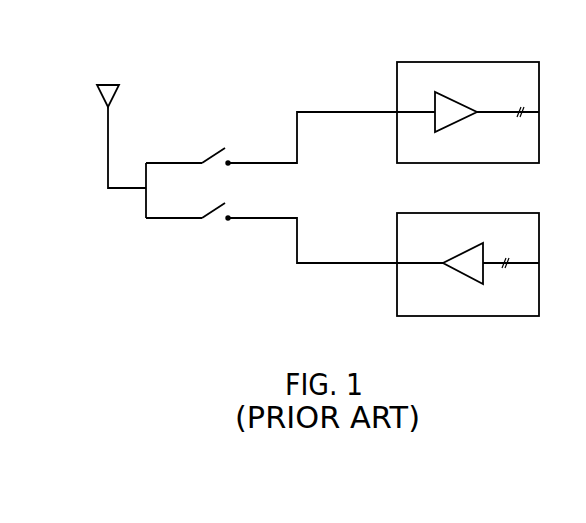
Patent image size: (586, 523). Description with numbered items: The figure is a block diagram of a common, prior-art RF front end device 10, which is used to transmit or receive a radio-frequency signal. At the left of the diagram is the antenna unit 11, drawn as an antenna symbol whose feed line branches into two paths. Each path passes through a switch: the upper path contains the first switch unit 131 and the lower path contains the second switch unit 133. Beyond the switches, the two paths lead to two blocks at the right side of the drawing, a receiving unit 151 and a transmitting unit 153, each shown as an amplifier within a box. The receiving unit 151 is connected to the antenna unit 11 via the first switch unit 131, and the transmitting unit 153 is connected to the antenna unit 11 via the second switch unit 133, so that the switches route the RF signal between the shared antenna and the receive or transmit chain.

The RF front end device 10 is at (322, 40).
The antenna unit 11 is at (115, 73).
The first switch unit 131 is at (228, 133).
The second switch unit 133 is at (232, 208).
The receiving unit 151 is at (500, 67).
The transmitting unit 153 is at (499, 220).